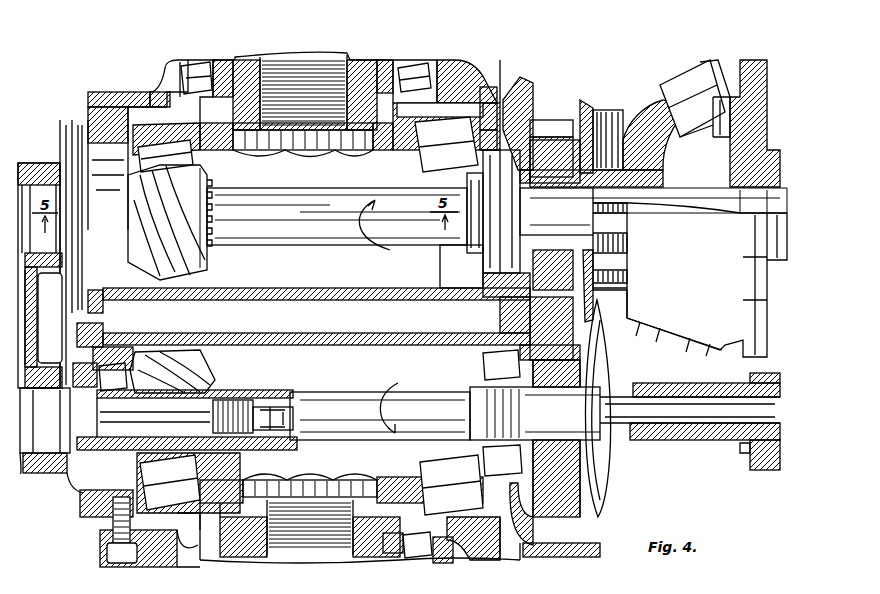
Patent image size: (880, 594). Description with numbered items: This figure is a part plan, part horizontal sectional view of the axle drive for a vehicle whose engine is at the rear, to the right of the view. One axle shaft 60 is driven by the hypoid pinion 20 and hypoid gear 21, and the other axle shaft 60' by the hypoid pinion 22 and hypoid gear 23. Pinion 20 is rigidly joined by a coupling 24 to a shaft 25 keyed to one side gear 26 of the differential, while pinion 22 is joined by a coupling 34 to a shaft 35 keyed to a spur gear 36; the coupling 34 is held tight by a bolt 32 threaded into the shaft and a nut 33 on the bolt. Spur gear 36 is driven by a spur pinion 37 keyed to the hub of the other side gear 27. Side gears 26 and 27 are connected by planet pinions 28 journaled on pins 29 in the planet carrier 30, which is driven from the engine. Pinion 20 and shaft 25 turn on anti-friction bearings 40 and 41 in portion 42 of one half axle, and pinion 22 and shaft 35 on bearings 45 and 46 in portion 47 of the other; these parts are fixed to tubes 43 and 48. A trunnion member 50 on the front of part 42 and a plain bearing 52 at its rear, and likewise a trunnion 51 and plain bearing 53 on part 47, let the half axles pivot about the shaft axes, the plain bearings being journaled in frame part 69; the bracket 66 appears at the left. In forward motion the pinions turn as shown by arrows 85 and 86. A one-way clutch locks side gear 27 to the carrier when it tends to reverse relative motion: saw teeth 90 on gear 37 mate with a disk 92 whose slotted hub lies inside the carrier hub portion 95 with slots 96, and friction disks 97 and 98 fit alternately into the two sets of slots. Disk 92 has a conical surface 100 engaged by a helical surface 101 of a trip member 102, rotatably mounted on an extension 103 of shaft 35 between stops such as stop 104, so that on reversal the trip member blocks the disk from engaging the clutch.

The hypoid pinion 20 is at (190, 245).
The hypoid gear 21 is at (218, 150).
The hypoid pinion 22 is at (205, 372).
The hypoid gear 23 is at (405, 480).
The coupling 24 is at (218, 240).
The shaft 25 is at (330, 232).
The side gear 26 is at (745, 165).
The side gear 27 is at (655, 178).
The planet pinions 28 is at (703, 135).
The pins 29 is at (685, 140).
The planet carrier 30 is at (680, 305).
The bolt 32 is at (225, 430).
The nut 33 is at (85, 392).
The coupling 34 is at (218, 400).
The shaft 35 is at (340, 405).
The spur gear 36 is at (578, 515).
The spur pinion 37 is at (550, 122).
The anti-friction bearing 40 is at (100, 130).
The anti-friction bearing 41 is at (505, 100).
The portion of one half axle 42 is at (380, 298).
The tube 43 is at (468, 80).
The anti-friction bearing 45 is at (78, 495).
The anti-friction bearing 46 is at (513, 525).
The portion of other half axle 47 is at (440, 335).
The tube 48 is at (462, 545).
The trunnion member 50 is at (70, 170).
The trunnion member 51 is at (88, 520).
The plain bearing 52 is at (535, 135).
The plain bearing 53 is at (530, 557).
The axle shaft 60 is at (315, 80).
The axle shaft 60' is at (312, 543).
The bracket 66 is at (28, 322).
The frame part 69 is at (523, 90).
The arrow 85 is at (375, 200).
The arrow 86 is at (395, 406).
The saw teeth 90 is at (583, 106).
The disk 92 is at (597, 128).
The cylindrical hub portion 95 is at (615, 262).
The slots 96 is at (625, 277).
The friction disks 97 is at (606, 137).
The friction disks 98 is at (632, 100).
The conical outside surface 100 is at (594, 115).
The helical surface 101 is at (605, 518).
The trip member 102 is at (670, 385).
The extension of shaft 103 is at (680, 410).
The stop member 104 is at (740, 453).